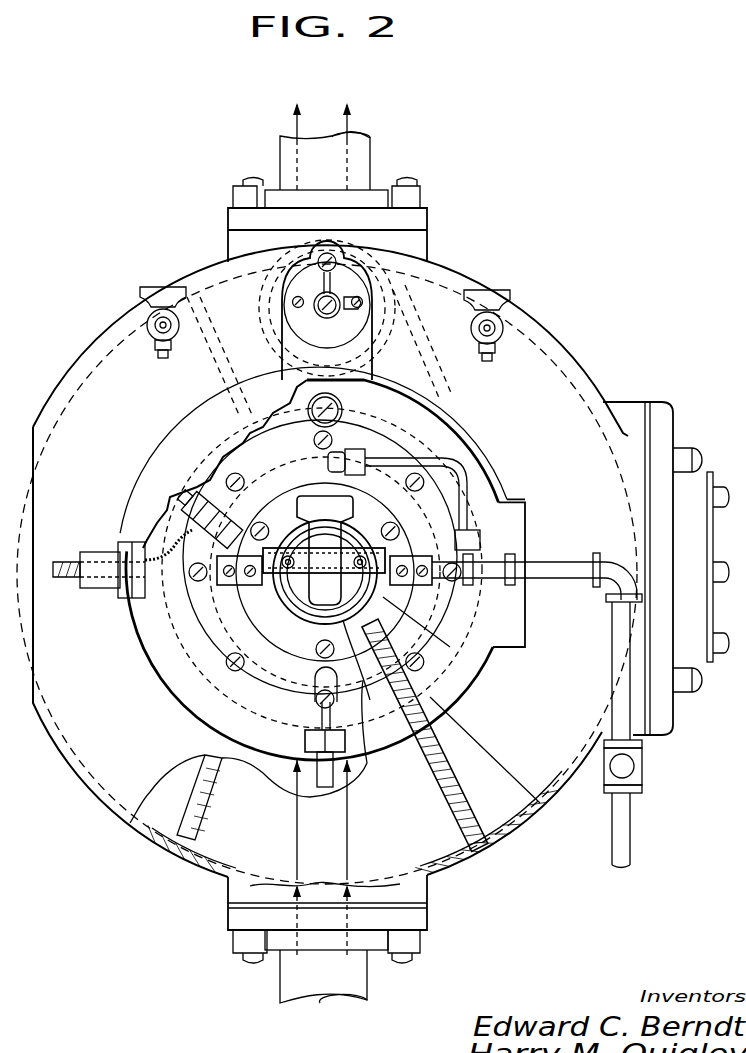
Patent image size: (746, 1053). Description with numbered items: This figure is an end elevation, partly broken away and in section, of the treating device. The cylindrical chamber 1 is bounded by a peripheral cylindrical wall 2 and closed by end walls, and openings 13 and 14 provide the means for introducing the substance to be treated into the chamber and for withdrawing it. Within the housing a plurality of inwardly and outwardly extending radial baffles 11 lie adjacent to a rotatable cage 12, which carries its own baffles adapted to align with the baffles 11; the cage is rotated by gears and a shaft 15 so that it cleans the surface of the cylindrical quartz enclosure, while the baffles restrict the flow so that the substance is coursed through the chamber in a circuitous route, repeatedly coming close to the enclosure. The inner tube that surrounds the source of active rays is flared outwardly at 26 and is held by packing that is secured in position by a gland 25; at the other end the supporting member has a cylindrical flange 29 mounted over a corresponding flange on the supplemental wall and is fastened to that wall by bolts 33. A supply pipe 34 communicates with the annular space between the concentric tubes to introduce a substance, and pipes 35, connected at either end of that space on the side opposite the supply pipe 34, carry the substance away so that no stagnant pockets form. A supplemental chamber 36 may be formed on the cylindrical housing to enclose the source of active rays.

The cylindrical chamber 1 is at (548, 385).
The peripheral cylindrical wall 2 is at (400, 256).
The radial baffles 11 is at (447, 800).
The rotatable cage 12 is at (360, 702).
The opening 13 is at (358, 157).
The opening 14 is at (302, 992).
The shaft 15 is at (322, 306).
The gland 25 is at (452, 604).
The flared portion of tube 26 is at (283, 590).
The cylindrical flange 29 is at (203, 622).
The bolts 33 is at (246, 671).
The supply pipe 34 is at (318, 724).
The pipes 35 is at (393, 462).
The supplemental chamber 36 is at (171, 668).